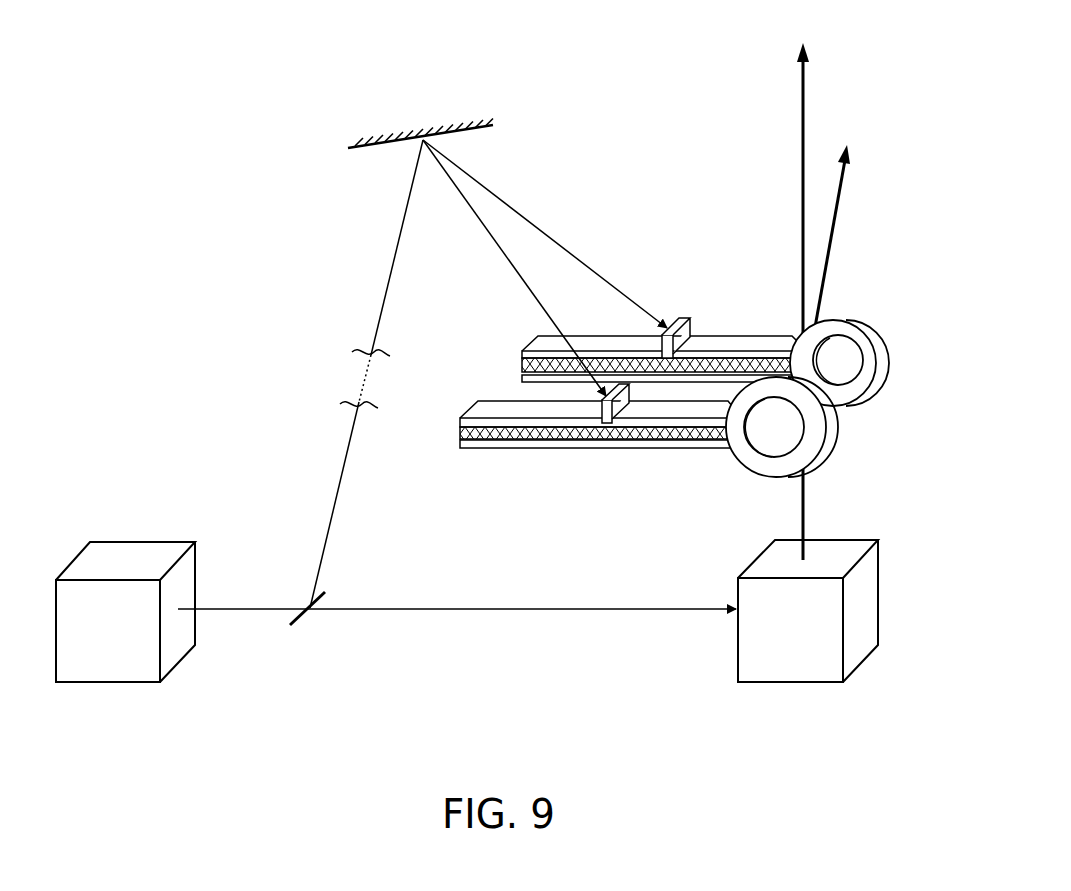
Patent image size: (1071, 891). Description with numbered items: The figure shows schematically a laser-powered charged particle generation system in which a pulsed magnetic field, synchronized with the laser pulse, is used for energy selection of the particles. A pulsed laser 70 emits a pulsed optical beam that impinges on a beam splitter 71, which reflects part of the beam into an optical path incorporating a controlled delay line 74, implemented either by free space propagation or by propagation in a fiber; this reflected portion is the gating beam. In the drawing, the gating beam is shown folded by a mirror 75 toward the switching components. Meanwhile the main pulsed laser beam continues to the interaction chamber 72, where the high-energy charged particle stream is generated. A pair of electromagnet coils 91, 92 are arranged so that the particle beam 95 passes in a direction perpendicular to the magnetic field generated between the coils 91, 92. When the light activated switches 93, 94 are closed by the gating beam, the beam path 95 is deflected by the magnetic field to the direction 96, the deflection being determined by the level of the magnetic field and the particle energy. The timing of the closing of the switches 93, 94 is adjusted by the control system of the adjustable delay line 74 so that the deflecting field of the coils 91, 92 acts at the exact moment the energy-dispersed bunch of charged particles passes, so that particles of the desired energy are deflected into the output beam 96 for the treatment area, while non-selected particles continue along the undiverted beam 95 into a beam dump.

The pulsed laser 70 is at (112, 684).
The beam splitter 71 is at (302, 626).
The interaction chamber 72 is at (792, 684).
The controlled delay line 74 is at (362, 380).
The mirror 75 is at (370, 150).
The electromagnet coil 91 is at (857, 314).
The electromagnet coil 92 is at (770, 479).
The light activated switch 93 is at (679, 320).
The light activated switch 94 is at (605, 430).
The particle beam 95 is at (802, 287).
The output beam 96 is at (835, 250).